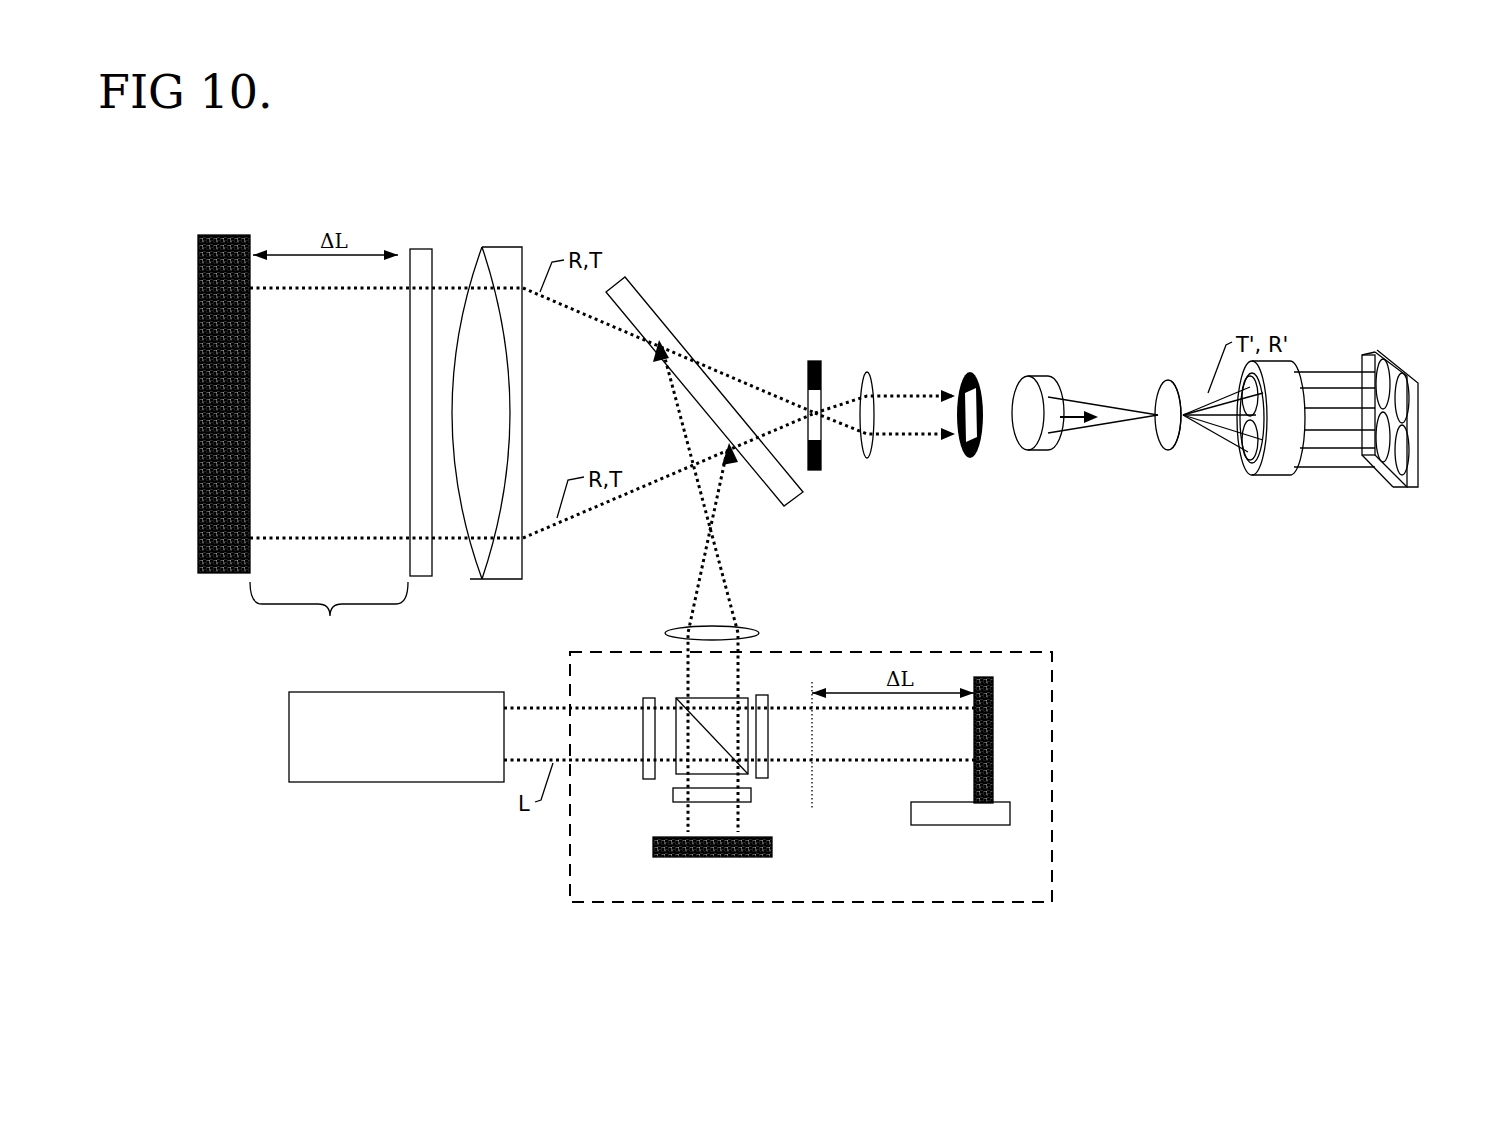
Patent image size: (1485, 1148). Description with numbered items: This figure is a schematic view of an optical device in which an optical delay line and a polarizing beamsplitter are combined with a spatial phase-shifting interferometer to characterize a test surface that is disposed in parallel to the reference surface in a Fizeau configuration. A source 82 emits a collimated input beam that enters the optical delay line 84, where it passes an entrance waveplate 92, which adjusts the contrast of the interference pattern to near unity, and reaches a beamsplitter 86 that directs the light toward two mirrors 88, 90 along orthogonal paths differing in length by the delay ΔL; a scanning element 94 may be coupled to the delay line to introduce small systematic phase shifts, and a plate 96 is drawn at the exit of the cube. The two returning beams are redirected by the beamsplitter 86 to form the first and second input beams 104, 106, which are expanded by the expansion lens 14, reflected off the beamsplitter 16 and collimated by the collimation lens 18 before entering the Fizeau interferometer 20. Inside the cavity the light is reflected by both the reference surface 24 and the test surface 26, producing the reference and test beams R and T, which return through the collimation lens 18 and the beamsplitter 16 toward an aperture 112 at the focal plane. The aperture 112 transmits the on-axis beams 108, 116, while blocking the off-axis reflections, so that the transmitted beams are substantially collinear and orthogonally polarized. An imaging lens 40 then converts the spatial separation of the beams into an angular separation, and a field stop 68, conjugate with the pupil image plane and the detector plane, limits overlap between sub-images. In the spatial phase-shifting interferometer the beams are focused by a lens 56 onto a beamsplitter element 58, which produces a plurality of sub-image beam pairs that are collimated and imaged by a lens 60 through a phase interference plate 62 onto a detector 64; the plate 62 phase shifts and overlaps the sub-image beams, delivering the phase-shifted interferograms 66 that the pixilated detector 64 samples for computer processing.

The expansion lens 14 is at (760, 630).
The beamsplitter 16 is at (632, 275).
The collimation lens 18 is at (527, 247).
The interferometer 20 is at (329, 617).
The reference surface 24 is at (413, 248).
The test surface 26 is at (250, 233).
The imaging lens 40 is at (867, 372).
The lens 56 is at (1035, 450).
The beamsplitter element 58 is at (1172, 450).
The lens 60 is at (1270, 477).
The phase interference plate 62 is at (1393, 490).
The detector 64 is at (1415, 490).
The phase-shifted interferograms 66 is at (1403, 412).
The field stop 68 is at (970, 455).
The light source 82 is at (328, 783).
The optical delay line 84 is at (630, 907).
The beamsplitter 86 is at (687, 712).
The mirror 88 is at (772, 847).
The mirror 90 is at (993, 692).
The entrance waveplate 92 is at (647, 780).
The scanning element 94 is at (748, 802).
The plate 96 is at (767, 697).
The first input beam 104 is at (710, 528).
The second input beam 106 is at (710, 528).
The beam 108 is at (893, 390).
The aperture 112 is at (814, 357).
The beam 116 is at (887, 437).